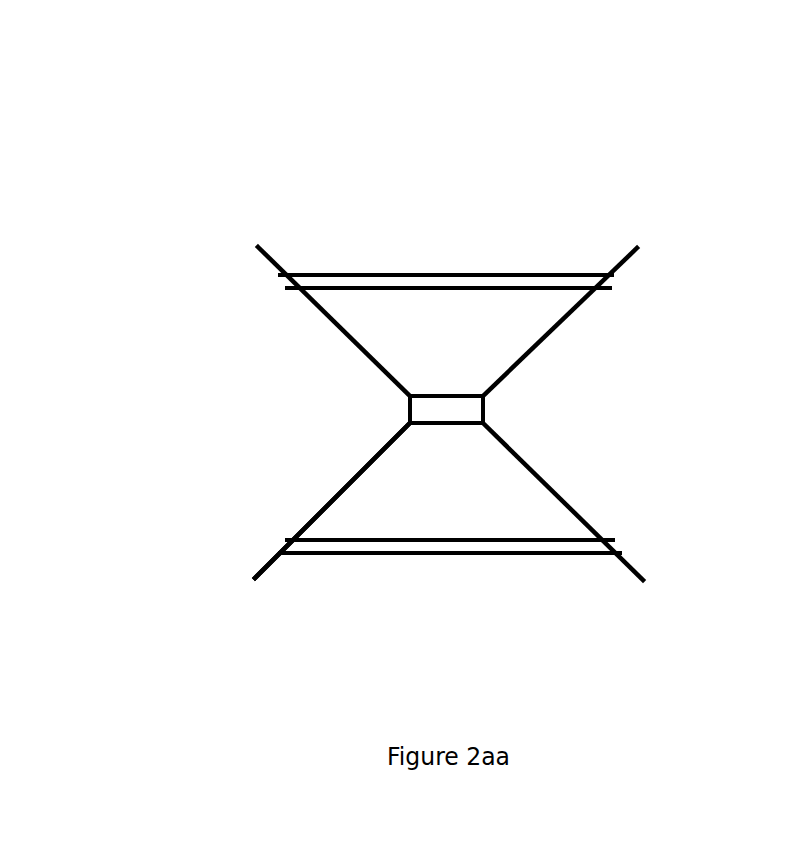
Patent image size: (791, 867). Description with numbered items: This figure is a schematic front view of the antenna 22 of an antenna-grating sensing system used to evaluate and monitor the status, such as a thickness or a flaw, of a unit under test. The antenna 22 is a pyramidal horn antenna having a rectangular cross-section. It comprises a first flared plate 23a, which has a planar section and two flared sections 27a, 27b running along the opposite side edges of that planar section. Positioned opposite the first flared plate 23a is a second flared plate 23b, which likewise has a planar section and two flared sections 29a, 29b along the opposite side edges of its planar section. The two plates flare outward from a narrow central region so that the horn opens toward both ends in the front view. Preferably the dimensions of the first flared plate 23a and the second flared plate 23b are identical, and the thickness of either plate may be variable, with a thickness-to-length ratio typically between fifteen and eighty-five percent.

The antenna 22 is at (445, 198).
The flared section 27a is at (278, 260).
The flared section 27b is at (632, 272).
The first flared plate 23a is at (483, 348).
The second flared plate 23b is at (385, 488).
The flared section 29a is at (275, 567).
The flared section 29b is at (640, 558).